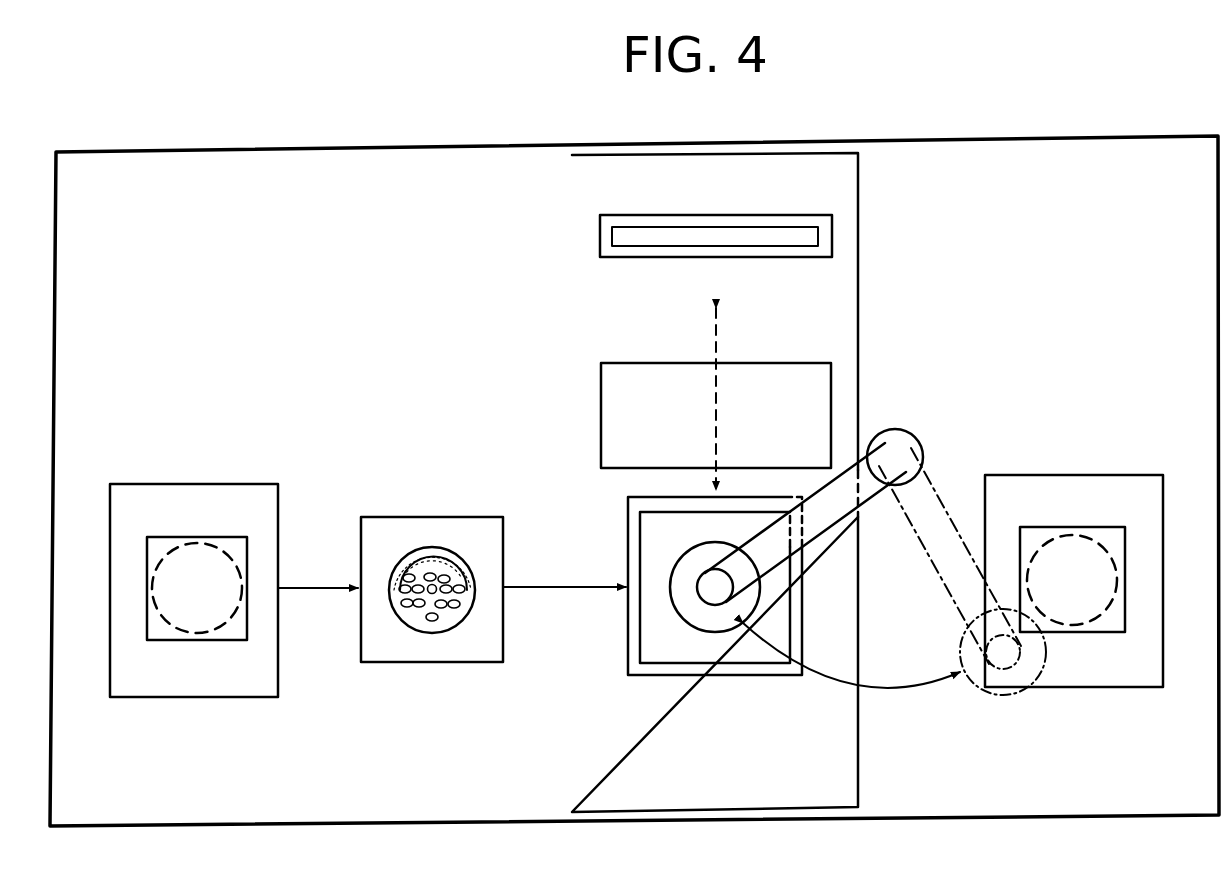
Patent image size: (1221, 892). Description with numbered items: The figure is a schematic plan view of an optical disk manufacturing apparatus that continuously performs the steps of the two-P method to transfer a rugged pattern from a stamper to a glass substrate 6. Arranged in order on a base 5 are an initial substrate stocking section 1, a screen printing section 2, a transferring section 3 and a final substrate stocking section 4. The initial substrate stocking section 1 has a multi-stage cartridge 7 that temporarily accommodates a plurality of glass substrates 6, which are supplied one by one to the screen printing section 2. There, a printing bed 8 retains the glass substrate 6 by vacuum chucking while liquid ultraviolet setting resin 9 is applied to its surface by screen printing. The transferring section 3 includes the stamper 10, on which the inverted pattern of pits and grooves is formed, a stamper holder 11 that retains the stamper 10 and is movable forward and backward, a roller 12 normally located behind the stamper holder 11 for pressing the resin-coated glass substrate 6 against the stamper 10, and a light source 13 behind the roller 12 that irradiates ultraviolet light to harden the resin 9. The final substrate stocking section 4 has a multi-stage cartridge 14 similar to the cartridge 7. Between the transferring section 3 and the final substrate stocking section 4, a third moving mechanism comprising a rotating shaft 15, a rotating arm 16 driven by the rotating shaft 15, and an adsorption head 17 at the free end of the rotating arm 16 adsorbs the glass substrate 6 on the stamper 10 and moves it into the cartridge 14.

The initial substrate stocking section 1 is at (226, 482).
The screen printing section 2 is at (432, 512).
The transferring section 3 is at (866, 215).
The final substrate stocking section 4 is at (1052, 472).
The base 5 is at (958, 820).
The glass substrate 6 is at (183, 547).
The multi-stage cartridge 7 is at (197, 641).
The printing bed 8 is at (390, 648).
The ultraviolet setting resin 9 is at (410, 560).
The stamper 10 is at (686, 605).
The stamper holder 11 is at (676, 650).
The roller 12 is at (610, 422).
The light source 13 is at (812, 233).
The multi-stage cartridge 14 is at (1097, 527).
The rotating shaft 15 is at (900, 448).
The rotating arm 16 is at (846, 490).
The adsorption head 17 is at (717, 596).